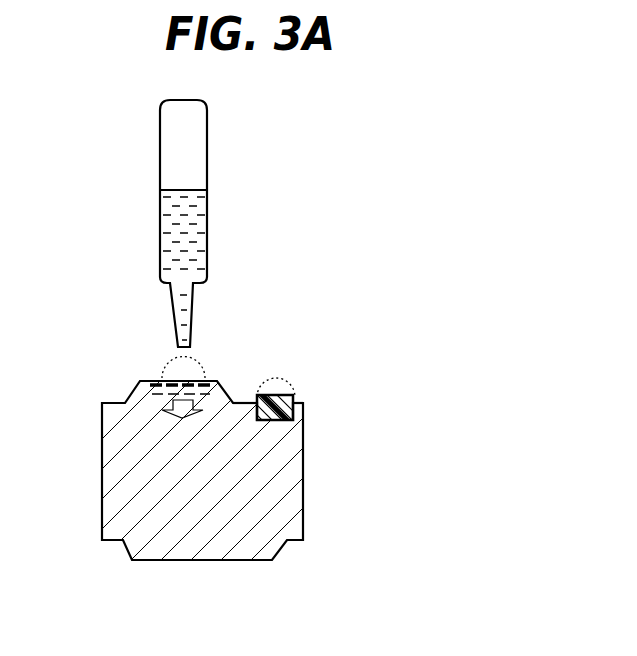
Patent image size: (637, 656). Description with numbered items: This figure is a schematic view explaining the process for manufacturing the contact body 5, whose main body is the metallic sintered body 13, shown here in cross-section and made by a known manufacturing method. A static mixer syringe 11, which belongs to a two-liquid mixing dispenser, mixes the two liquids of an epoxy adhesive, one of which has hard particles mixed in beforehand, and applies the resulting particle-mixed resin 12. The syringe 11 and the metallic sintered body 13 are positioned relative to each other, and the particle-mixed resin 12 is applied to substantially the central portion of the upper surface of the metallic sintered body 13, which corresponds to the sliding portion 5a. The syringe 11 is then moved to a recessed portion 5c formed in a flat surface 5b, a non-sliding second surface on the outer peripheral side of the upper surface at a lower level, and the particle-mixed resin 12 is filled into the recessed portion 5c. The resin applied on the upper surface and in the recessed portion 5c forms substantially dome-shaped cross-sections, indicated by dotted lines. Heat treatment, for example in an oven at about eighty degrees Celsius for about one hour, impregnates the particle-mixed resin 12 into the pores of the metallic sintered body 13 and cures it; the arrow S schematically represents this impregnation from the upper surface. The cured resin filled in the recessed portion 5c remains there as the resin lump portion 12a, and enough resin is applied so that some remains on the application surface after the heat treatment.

The static mixer syringe 11 is at (207, 150).
The contact body 5 is at (269, 434).
The sliding portion 5a is at (153, 378).
The flat surface 5b is at (247, 399).
The recessed portion 5c is at (305, 405).
The particle-mixed resin 12 is at (166, 375).
The resin lump portion 12a is at (294, 396).
The metallic sintered body 13 is at (280, 507).
The arrow S is at (182, 414).